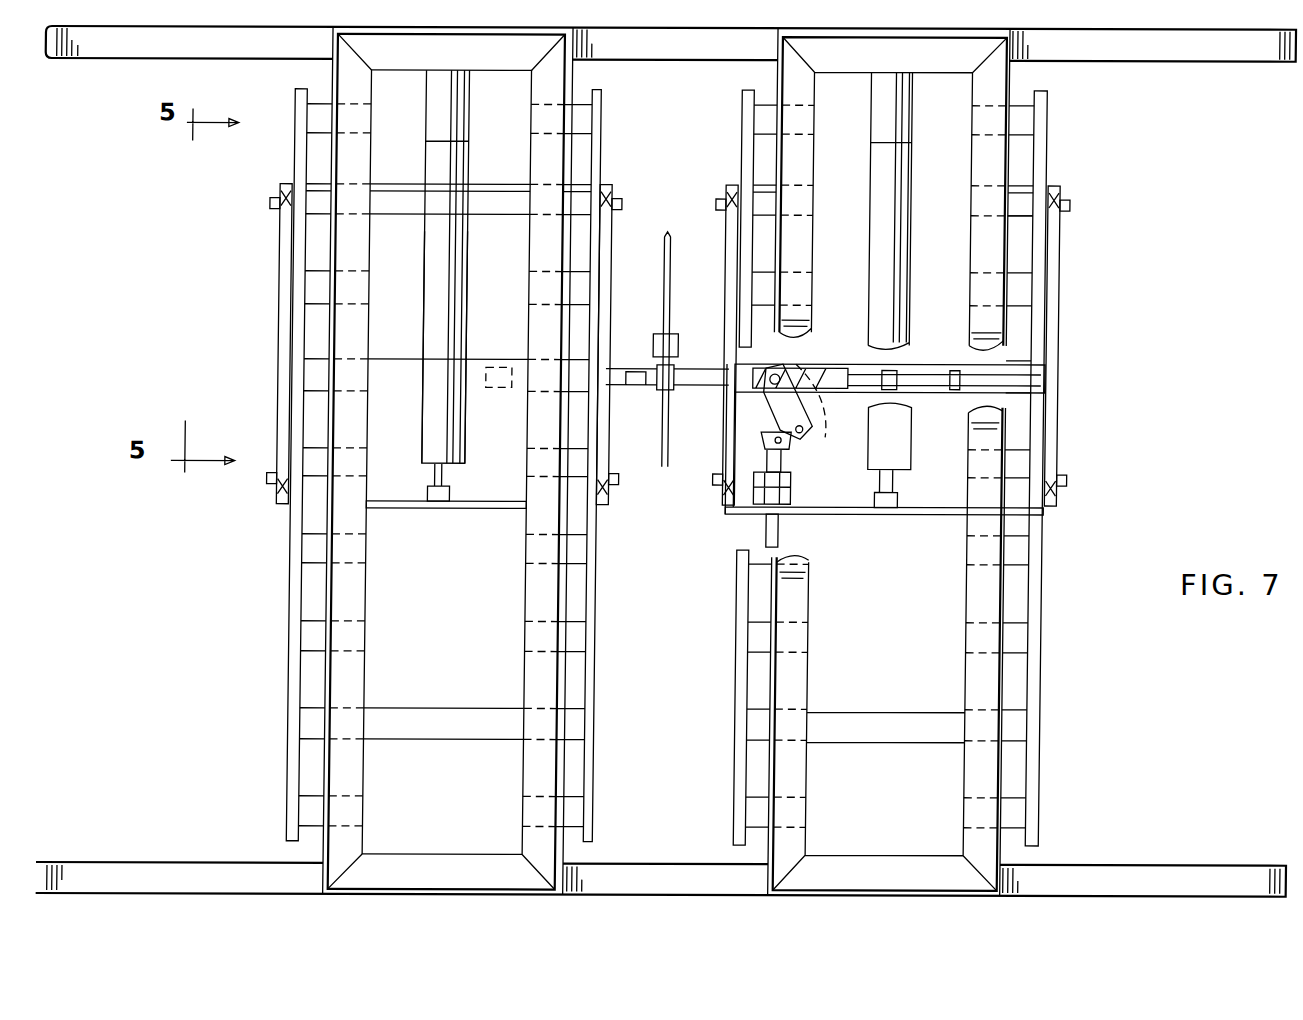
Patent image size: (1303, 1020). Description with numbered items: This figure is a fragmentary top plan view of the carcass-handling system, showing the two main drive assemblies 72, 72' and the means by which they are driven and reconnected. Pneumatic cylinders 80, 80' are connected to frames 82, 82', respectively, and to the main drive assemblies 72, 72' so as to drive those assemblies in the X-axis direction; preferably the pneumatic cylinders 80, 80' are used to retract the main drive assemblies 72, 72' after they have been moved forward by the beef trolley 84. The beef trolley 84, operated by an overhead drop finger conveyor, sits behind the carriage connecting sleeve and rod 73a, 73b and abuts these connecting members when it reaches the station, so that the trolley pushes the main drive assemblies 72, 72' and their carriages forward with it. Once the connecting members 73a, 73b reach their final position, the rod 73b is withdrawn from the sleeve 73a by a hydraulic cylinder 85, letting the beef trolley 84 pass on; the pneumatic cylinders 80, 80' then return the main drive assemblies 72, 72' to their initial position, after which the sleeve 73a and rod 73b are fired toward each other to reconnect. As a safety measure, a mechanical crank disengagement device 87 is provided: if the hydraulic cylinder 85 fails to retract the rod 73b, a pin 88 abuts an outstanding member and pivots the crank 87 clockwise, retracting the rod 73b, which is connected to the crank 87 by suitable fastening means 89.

The main drive assembly 72 is at (446, 532).
The main drive assembly 72' is at (884, 536).
The carriage connecting sleeve 73a is at (636, 385).
The carriage connecting rod 73b is at (690, 385).
The pneumatic cylinder 80 is at (464, 366).
The pneumatic cylinder 80' is at (910, 384).
The frame 82 is at (463, 258).
The frame 82' is at (913, 204).
The beef trolley 84 is at (675, 345).
The hydraulic cylinder 85 is at (1020, 372).
The mechanical crank disengagement device 87 is at (794, 444).
The pin 88 is at (786, 532).
The fastening means 89 is at (786, 363).